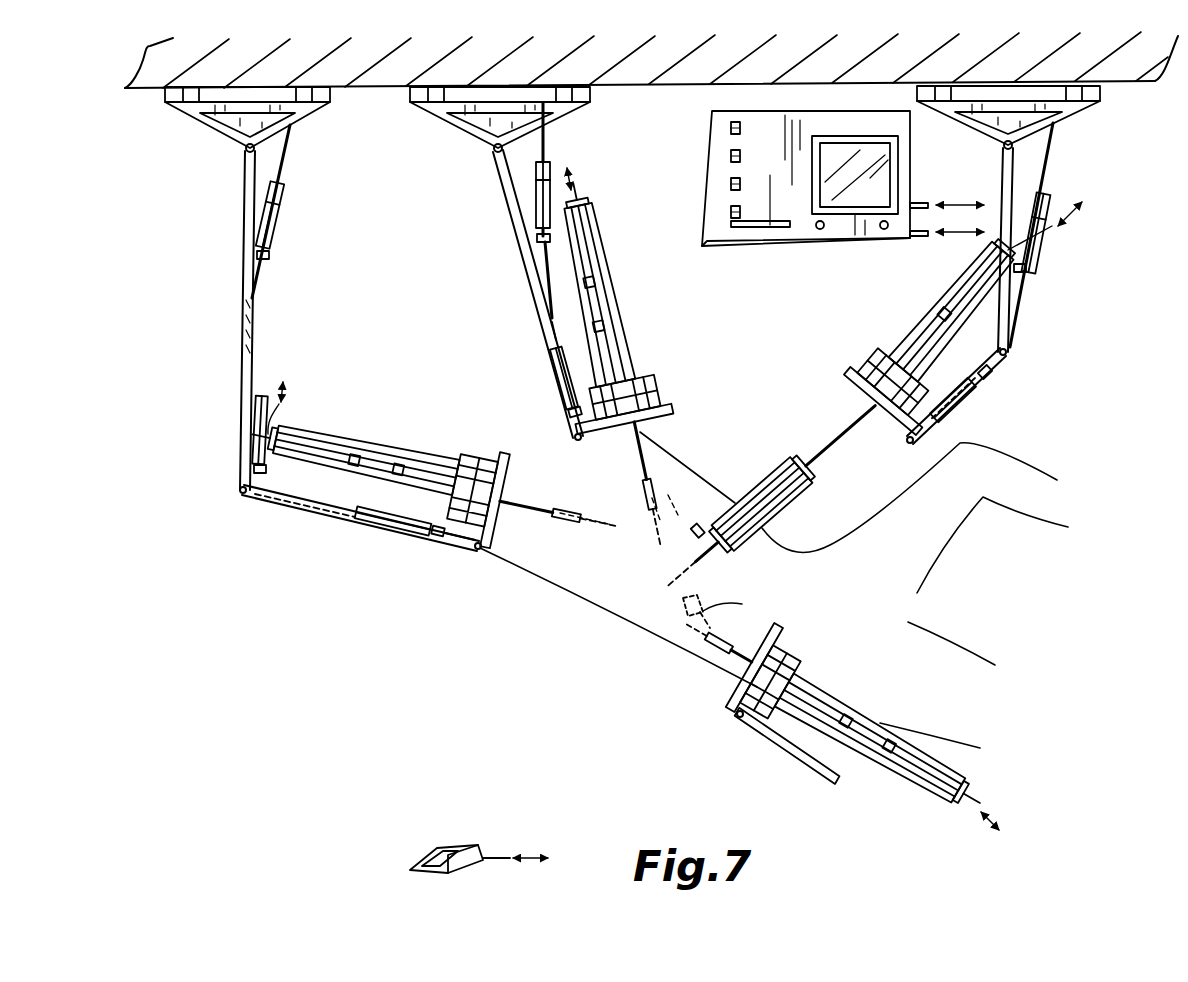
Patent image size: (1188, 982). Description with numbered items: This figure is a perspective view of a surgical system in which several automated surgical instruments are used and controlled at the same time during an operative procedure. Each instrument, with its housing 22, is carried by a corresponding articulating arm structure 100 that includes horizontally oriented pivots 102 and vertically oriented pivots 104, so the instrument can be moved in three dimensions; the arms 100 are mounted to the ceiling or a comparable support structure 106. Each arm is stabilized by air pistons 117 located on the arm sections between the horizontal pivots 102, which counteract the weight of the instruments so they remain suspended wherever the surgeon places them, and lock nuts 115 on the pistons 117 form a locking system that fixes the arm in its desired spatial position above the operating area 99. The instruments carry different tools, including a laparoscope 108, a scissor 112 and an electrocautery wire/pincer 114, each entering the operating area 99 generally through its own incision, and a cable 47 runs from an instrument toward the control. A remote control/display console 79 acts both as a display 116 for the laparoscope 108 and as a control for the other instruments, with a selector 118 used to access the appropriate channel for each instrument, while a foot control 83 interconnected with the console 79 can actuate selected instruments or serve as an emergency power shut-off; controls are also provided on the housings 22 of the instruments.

The housing 22 is at (343, 447).
The instrument cable 47 is at (582, 392).
The control box/display console 79 is at (803, 250).
The foot control 83 is at (483, 843).
The operating area 99 is at (633, 574).
The articulating arm structure 100 is at (272, 255).
The horizontal pivot 102 is at (252, 320).
The vertical pivot 104 is at (334, 95).
The support structure 106 is at (434, 48).
The laparoscope 108 is at (717, 552).
The scissor 112 is at (596, 530).
The electrocautery wire/pincer 114 is at (660, 488).
The lock nut 115 is at (250, 252).
The display 116 is at (842, 150).
The air piston 117 is at (277, 200).
The selector 118 is at (730, 226).